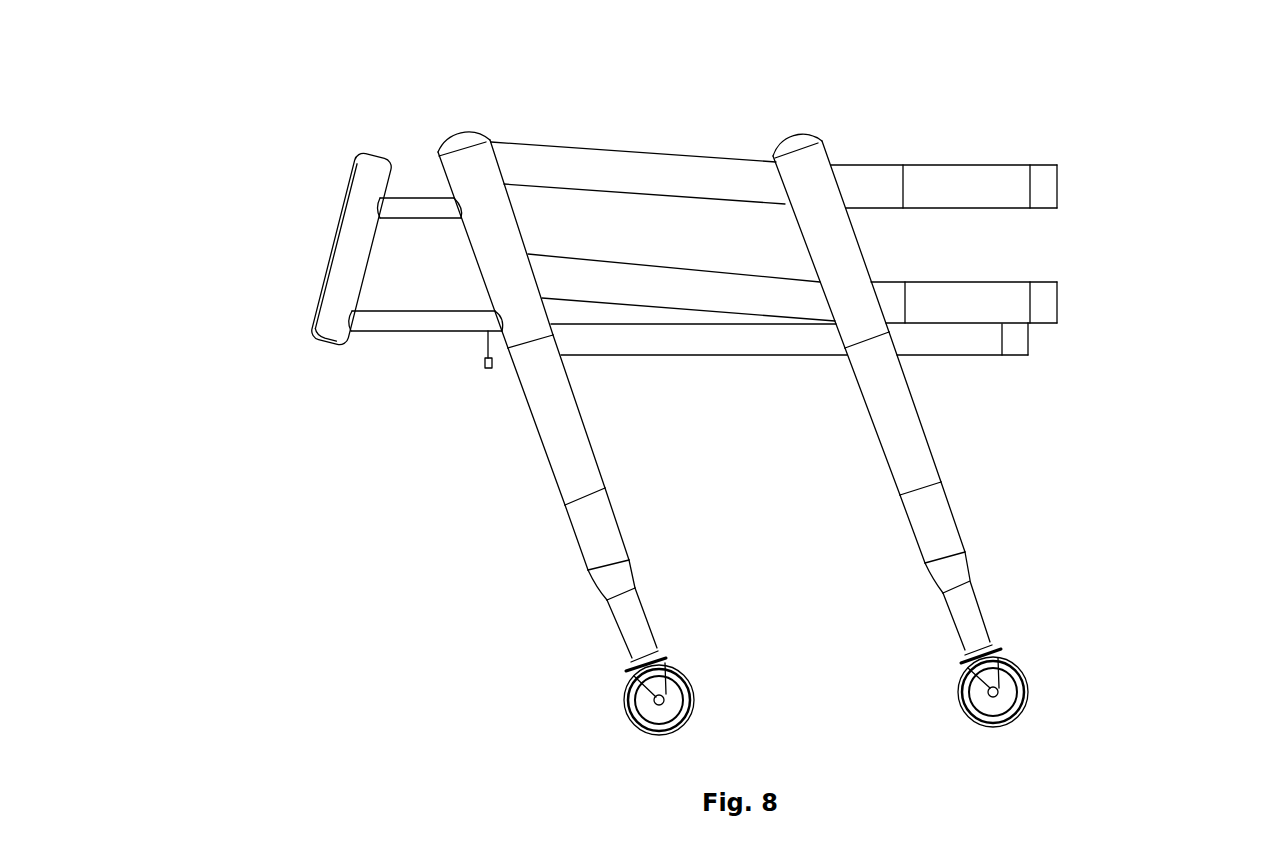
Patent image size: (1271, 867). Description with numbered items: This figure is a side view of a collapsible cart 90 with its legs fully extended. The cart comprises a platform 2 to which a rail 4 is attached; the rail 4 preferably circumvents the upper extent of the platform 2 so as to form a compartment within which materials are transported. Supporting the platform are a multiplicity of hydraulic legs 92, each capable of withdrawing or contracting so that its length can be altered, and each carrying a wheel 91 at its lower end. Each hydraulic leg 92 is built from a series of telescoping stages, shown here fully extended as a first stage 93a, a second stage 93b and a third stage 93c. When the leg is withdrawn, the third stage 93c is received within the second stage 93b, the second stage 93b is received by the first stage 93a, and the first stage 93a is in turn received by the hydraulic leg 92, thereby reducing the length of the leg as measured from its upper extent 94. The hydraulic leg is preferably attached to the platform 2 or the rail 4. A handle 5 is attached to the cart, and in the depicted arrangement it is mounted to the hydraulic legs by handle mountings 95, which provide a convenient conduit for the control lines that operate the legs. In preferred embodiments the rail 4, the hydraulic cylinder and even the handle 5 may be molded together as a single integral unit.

The platform 2 is at (809, 382).
The rail 4 is at (787, 243).
The handle 5 is at (292, 248).
The collapsible cart 90 is at (720, 378).
The wheel 91 is at (751, 688).
The hydraulic leg 92 is at (741, 244).
The first stage 93a is at (730, 418).
The second stage 93b is at (754, 541).
The third stage 93c is at (781, 626).
The upper extent 94 is at (657, 89).
The handle mountings 95 is at (414, 257).